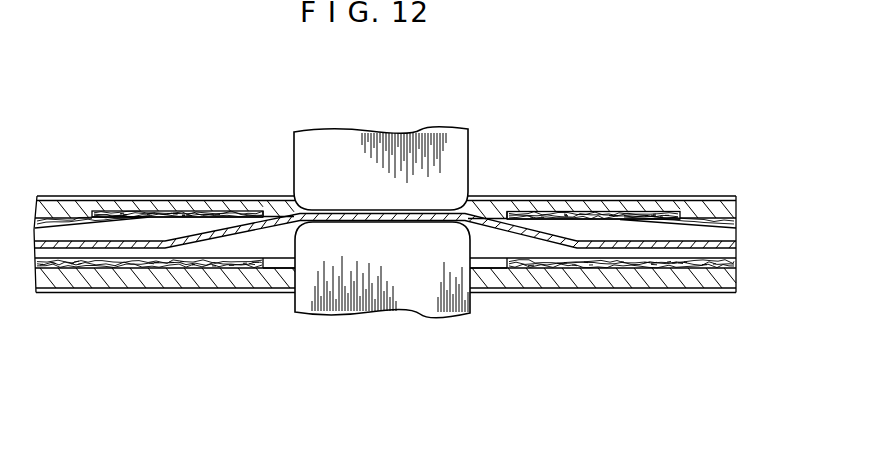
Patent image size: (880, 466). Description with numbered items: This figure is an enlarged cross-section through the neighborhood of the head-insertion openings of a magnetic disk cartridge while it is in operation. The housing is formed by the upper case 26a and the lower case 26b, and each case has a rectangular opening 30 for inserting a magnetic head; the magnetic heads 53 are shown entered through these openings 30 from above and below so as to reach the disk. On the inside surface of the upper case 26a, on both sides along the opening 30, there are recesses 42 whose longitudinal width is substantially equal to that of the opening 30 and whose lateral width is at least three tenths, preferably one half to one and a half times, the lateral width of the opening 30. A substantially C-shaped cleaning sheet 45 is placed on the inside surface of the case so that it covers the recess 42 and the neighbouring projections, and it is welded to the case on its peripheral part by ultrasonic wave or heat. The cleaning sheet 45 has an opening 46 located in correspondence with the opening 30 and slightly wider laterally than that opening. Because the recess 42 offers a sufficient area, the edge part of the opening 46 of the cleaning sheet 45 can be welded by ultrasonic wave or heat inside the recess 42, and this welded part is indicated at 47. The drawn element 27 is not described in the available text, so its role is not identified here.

The upper case 26a is at (713, 205).
The lower case 26b is at (697, 278).
The center conductor 27 is at (598, 237).
The opening for inserting a magnetic head 30 is at (478, 205).
The recess 42 is at (102, 208).
The cleaning sheet 45 is at (176, 207).
The opening of the cleaning sheet 46 is at (267, 207).
The welded part 47 is at (247, 206).
The magnetic heads 53 is at (338, 158).